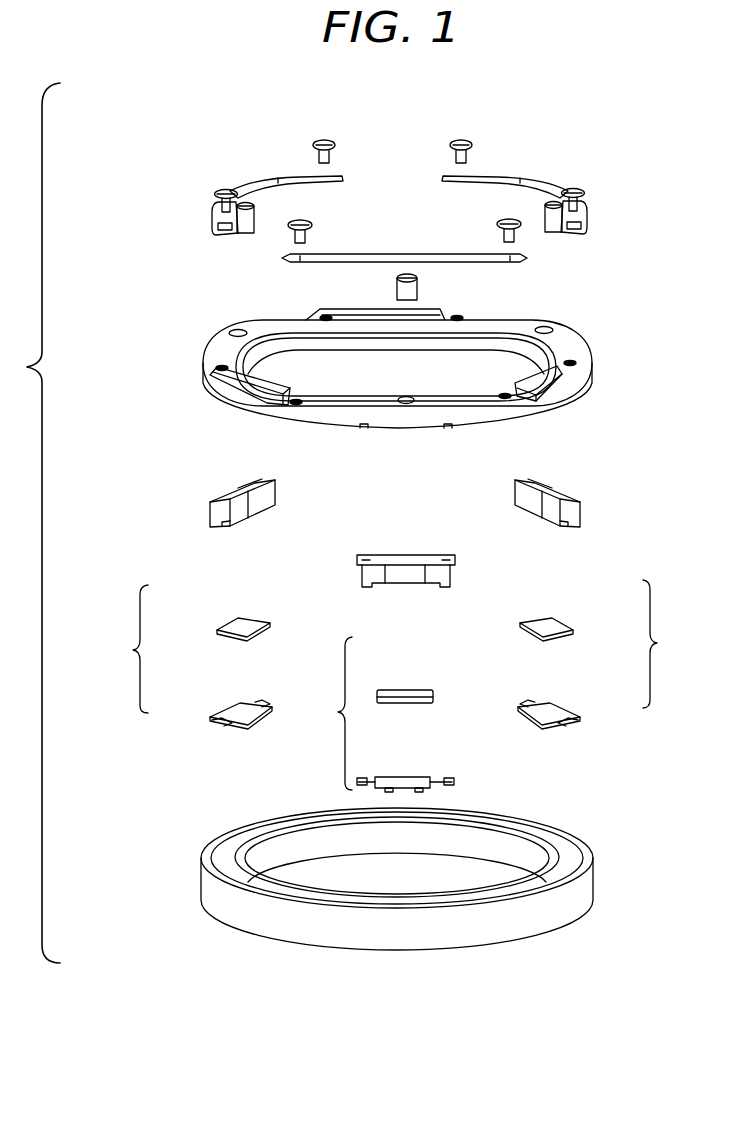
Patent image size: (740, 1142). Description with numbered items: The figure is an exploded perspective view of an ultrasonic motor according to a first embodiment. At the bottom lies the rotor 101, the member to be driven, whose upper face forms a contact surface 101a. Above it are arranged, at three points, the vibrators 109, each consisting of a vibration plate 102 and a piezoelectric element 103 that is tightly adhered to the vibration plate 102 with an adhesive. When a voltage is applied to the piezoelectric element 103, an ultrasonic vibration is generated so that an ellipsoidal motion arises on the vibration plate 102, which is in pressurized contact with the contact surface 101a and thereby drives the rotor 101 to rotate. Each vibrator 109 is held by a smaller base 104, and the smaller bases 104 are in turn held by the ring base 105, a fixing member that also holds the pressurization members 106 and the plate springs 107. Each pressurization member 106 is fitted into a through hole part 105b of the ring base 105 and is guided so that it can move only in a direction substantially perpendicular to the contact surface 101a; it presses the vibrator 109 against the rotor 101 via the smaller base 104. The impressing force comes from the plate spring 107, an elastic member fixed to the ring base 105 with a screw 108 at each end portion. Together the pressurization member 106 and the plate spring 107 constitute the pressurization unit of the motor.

The rotor 101 is at (428, 876).
The contact surface 101a is at (562, 866).
The vibration plate 102 is at (230, 712).
The piezoelectric element 103 is at (235, 625).
The smaller base 104 is at (220, 513).
The ring base 105 is at (568, 392).
The through hole part 105b is at (230, 334).
The pressurization member 106 is at (245, 227).
The plate spring 107 is at (248, 183).
The screw 108 is at (323, 139).
The vibrator 109 is at (397, 685).